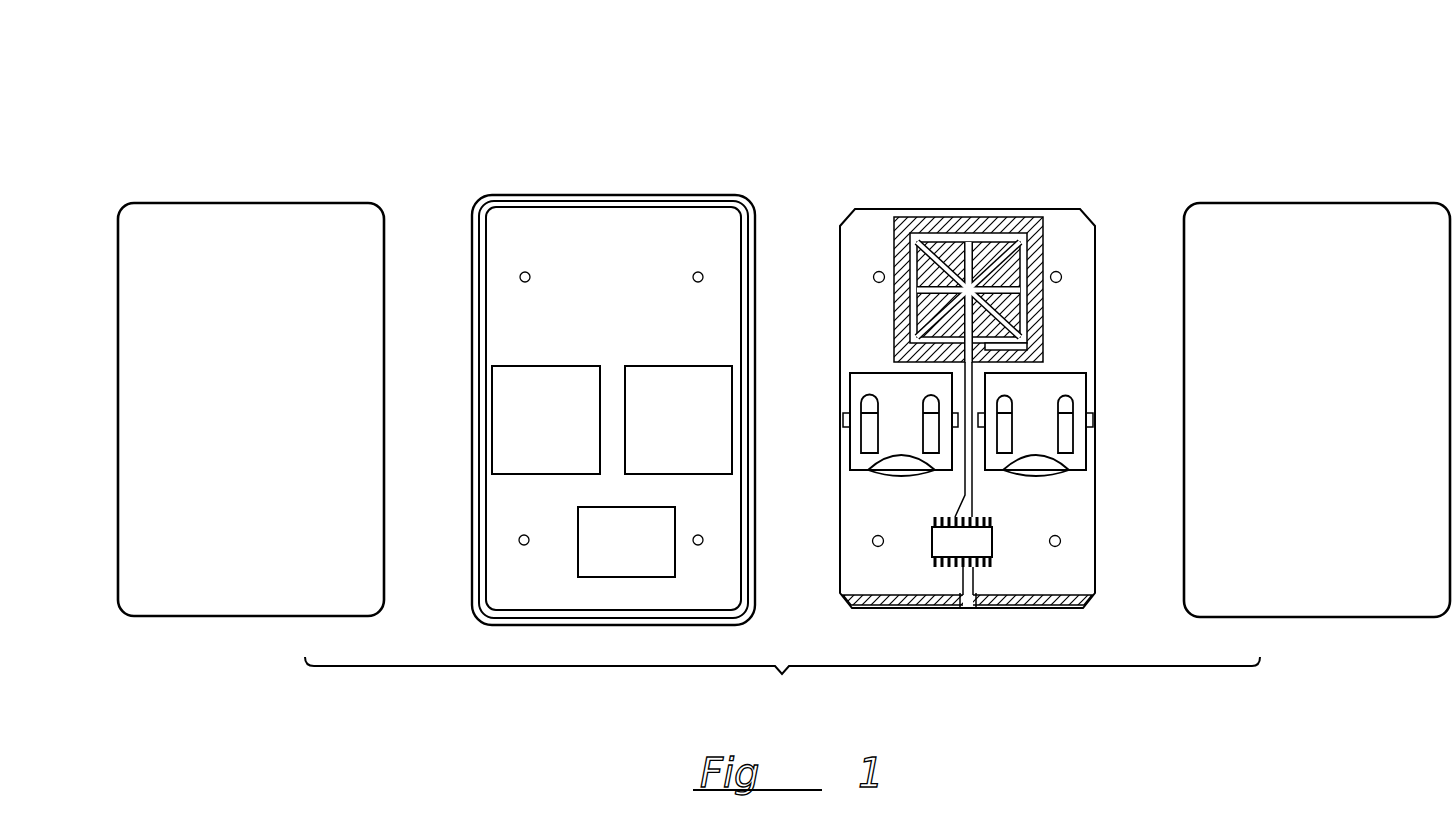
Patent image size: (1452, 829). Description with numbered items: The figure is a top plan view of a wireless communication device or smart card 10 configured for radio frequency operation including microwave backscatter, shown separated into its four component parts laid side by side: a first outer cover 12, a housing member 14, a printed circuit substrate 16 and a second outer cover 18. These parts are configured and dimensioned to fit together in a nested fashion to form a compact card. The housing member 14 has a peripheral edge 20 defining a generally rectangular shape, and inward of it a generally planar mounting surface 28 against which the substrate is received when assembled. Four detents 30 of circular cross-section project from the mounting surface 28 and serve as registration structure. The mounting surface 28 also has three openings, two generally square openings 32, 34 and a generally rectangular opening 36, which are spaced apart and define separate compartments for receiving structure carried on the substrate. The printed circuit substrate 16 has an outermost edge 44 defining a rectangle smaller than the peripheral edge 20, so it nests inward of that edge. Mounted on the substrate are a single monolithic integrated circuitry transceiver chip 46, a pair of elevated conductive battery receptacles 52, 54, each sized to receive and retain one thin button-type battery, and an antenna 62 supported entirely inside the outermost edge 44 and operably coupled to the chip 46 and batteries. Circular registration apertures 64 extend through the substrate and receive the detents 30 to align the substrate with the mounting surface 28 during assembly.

The wireless communication device 10 is at (276, 96).
The first outer cover 12 is at (236, 198).
The housing member 14 is at (581, 192).
The printed circuit substrate 16 is at (918, 206).
The second outer cover 18 is at (1296, 200).
The peripheral edge 20 is at (637, 195).
The mounting surface 28 is at (600, 268).
The detents 30 is at (526, 271).
The opening 32 is at (562, 349).
The opening 34 is at (663, 349).
The opening 36 is at (568, 562).
The outermost edge 44 is at (998, 210).
The integrated circuitry transceiver chip 46 is at (942, 544).
The conductive battery receptacle 52 is at (847, 385).
The conductive battery receptacle 54 is at (1089, 385).
The antenna 62 is at (955, 225).
The registration apertures 64 is at (875, 274).